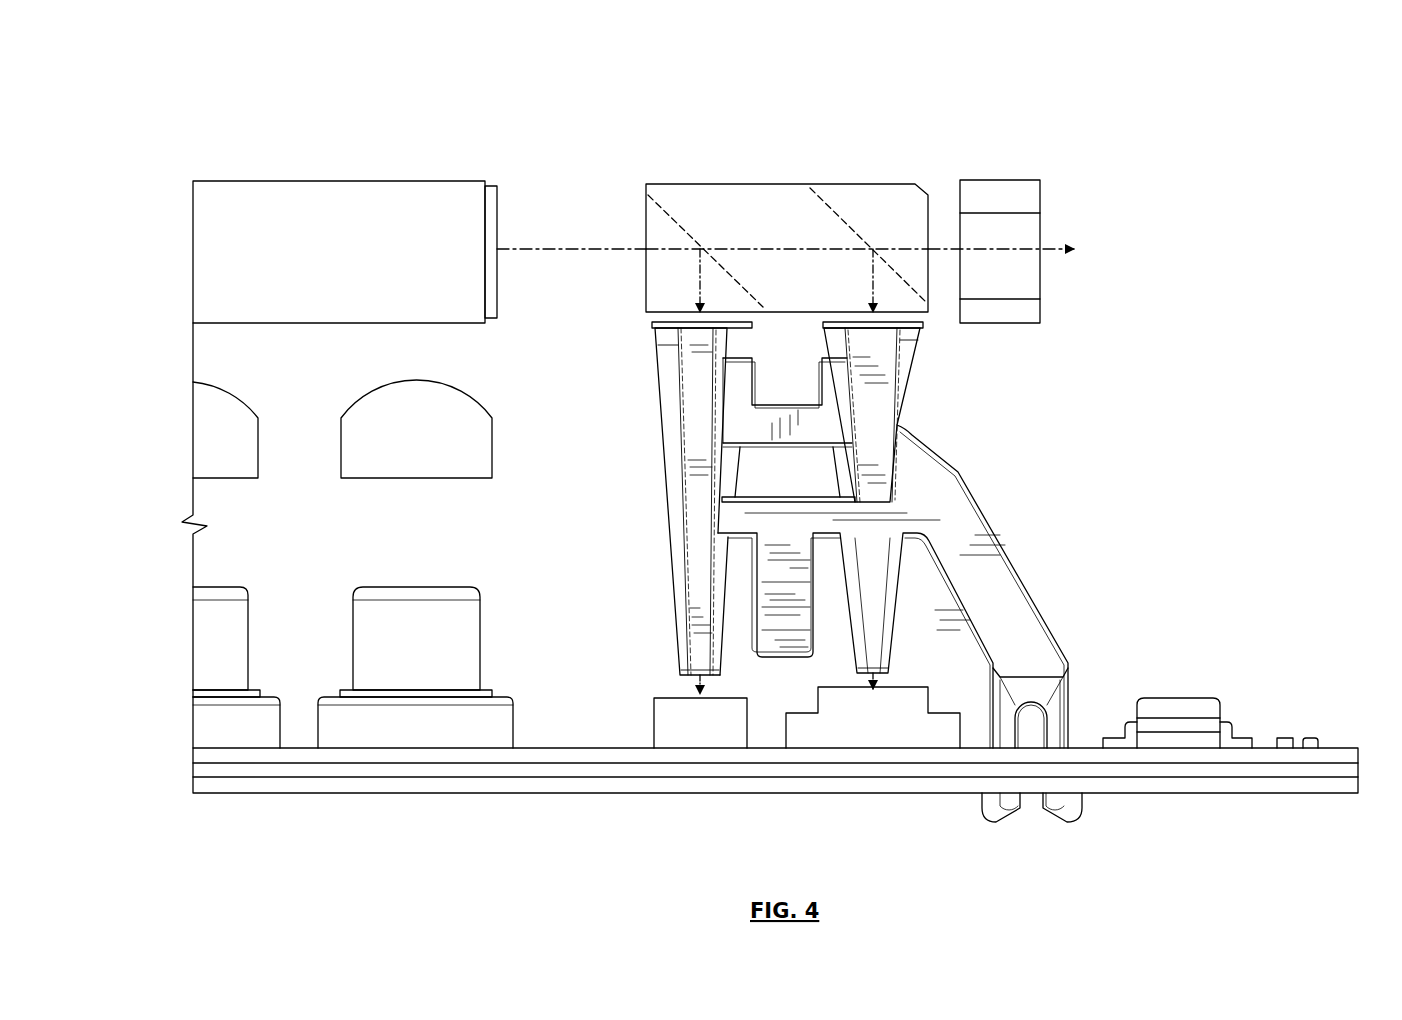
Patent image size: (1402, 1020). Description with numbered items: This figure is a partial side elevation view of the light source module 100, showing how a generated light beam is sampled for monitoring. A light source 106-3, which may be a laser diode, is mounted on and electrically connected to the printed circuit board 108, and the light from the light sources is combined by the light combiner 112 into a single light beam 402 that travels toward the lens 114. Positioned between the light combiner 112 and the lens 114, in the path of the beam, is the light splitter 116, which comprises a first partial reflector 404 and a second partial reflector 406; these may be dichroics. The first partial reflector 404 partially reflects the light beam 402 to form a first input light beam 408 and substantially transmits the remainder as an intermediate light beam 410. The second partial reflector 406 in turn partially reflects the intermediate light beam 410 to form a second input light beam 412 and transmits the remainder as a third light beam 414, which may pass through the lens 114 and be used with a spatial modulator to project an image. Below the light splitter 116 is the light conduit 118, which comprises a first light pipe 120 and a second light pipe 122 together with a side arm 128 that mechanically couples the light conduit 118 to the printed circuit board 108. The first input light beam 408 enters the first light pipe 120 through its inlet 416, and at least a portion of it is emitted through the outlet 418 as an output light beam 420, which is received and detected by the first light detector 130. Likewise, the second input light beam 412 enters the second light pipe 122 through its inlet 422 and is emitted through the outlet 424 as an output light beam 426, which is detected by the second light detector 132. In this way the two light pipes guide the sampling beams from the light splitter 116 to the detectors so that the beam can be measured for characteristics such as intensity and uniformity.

The light source module 100 is at (1100, 62).
The light combiner 112 is at (310, 205).
The lens 114 is at (1032, 230).
The light splitter 116 is at (787, 195).
The light conduit 118 is at (913, 432).
The first light pipe 120 is at (673, 465).
The second light pipe 122 is at (870, 400).
The side arm 128 is at (854, 535).
The first light detector 130 is at (680, 738).
The second light detector 132 is at (843, 735).
The printed circuit board 108 is at (267, 782).
The light source 106-3 is at (390, 660).
The light beam 402 is at (566, 245).
The first partial reflector 404 is at (668, 213).
The second partial reflector 406 is at (837, 213).
The first input light beam 408 is at (698, 280).
The intermediate light beam 410 is at (765, 242).
The second input light beam 412 is at (873, 277).
The third light beam 414 is at (945, 248).
The inlet 416 is at (665, 335).
The outlet 418 is at (685, 672).
The output light beam 420 is at (696, 684).
The inlet 422 is at (893, 331).
The outlet 424 is at (888, 662).
The output light beam 426 is at (870, 682).